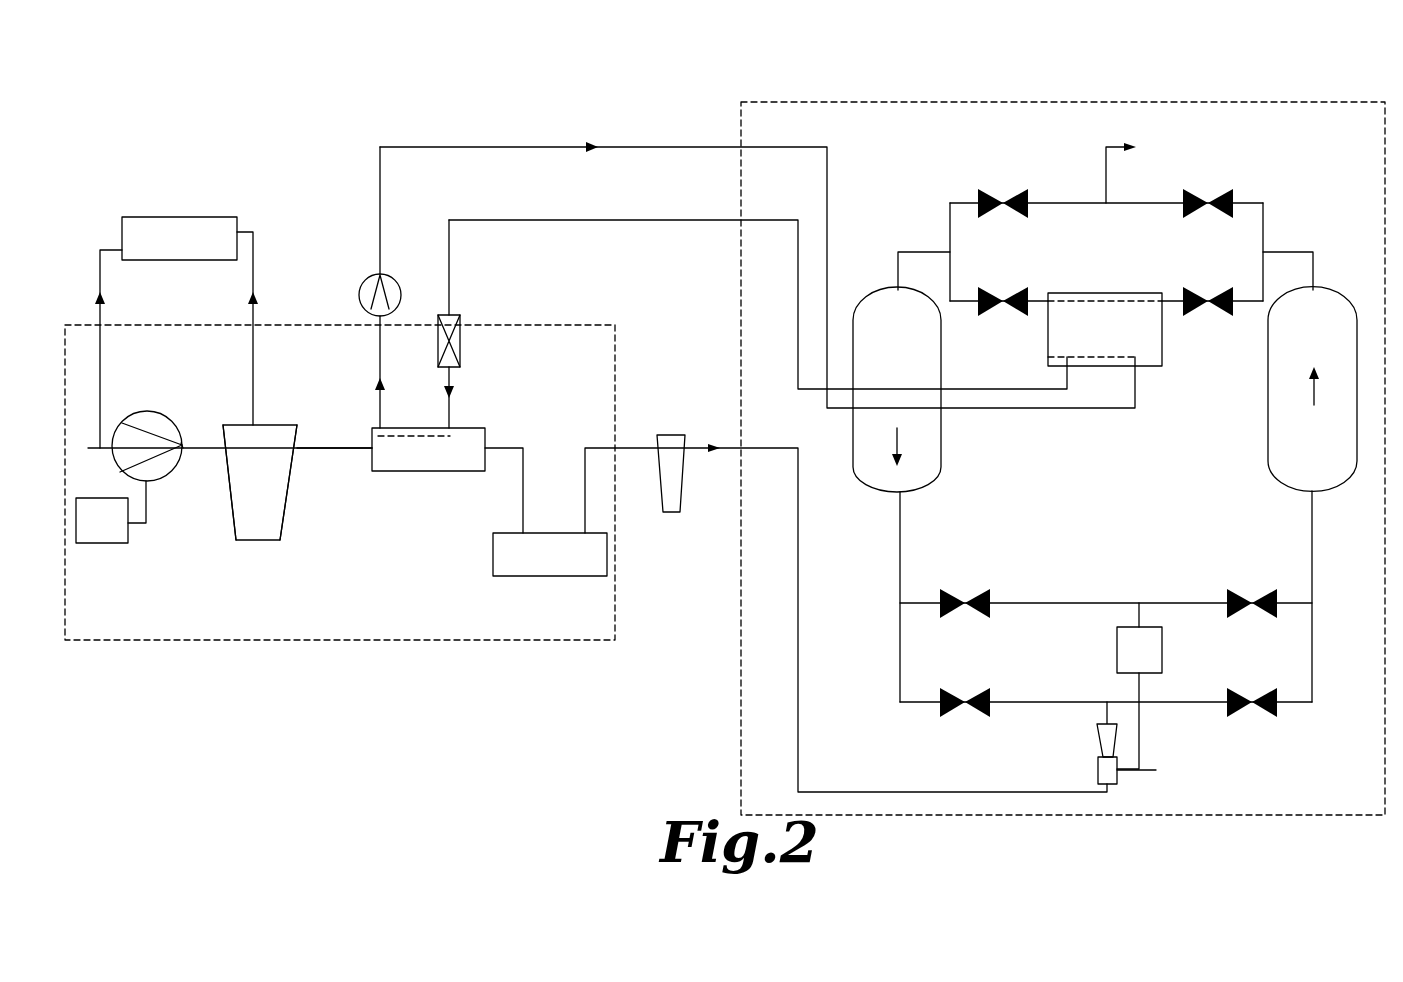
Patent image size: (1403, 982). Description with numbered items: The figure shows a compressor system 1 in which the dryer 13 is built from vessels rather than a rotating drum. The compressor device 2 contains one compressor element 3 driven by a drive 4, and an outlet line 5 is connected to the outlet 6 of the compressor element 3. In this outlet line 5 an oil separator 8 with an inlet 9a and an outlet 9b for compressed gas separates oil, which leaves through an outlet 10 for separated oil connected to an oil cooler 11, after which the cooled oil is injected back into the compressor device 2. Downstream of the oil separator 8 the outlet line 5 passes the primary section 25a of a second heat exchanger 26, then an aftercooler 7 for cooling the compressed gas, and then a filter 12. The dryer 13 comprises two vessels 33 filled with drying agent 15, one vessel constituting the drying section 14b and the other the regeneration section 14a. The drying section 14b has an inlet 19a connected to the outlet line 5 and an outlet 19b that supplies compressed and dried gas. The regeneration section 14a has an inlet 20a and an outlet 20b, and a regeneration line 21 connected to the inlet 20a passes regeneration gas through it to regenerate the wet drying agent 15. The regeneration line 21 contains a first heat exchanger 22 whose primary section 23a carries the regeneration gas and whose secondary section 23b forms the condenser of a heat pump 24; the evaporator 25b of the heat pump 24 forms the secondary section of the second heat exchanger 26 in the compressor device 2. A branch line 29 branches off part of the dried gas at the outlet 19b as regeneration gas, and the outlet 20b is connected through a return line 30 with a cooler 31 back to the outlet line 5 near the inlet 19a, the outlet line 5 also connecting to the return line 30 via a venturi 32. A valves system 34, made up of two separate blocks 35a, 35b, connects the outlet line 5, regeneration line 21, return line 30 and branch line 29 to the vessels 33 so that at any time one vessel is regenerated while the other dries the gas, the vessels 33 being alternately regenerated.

The compressor system 1 is at (286, 100).
The compressor device 2 is at (317, 642).
The compressor element 3 is at (168, 481).
The drive 4 is at (103, 545).
The outlet line 5 is at (322, 455).
The outlet 6 is at (183, 446).
The aftercooler 7 is at (512, 578).
The oil separator 8 is at (258, 542).
The inlet 9a is at (226, 447).
The outlet 9b is at (295, 447).
The outlet for separated oil 10 is at (256, 424).
The oil cooler 11 is at (140, 216).
The filter 12 is at (670, 515).
The dryer 13 is at (897, 816).
The regeneration section 14a is at (865, 372).
The drying section 14b is at (1287, 379).
The drying agent 15 is at (1097, 338).
The inlet 19a is at (1310, 495).
The outlet 19b is at (1315, 290).
The inlet 20a is at (895, 283).
The outlet 20b is at (910, 488).
The regeneration line 21 is at (916, 250).
The first heat exchanger 22 is at (1048, 350).
The primary section 23a is at (1145, 300).
The secondary section 23b is at (1065, 358).
The heat pump 24 is at (360, 328).
The primary section 25a is at (428, 480).
The evaporator 25b is at (452, 430).
The second heat exchanger 26 is at (480, 471).
The branch line 29 is at (950, 268).
The return line 30 is at (1140, 683).
The cooler 31 is at (1117, 650).
The venturi 32 is at (1100, 742).
The vessels 33 is at (918, 442).
The valves system 34 is at (1252, 158).
The block 35a is at (1182, 178).
The block 35b is at (1254, 582).